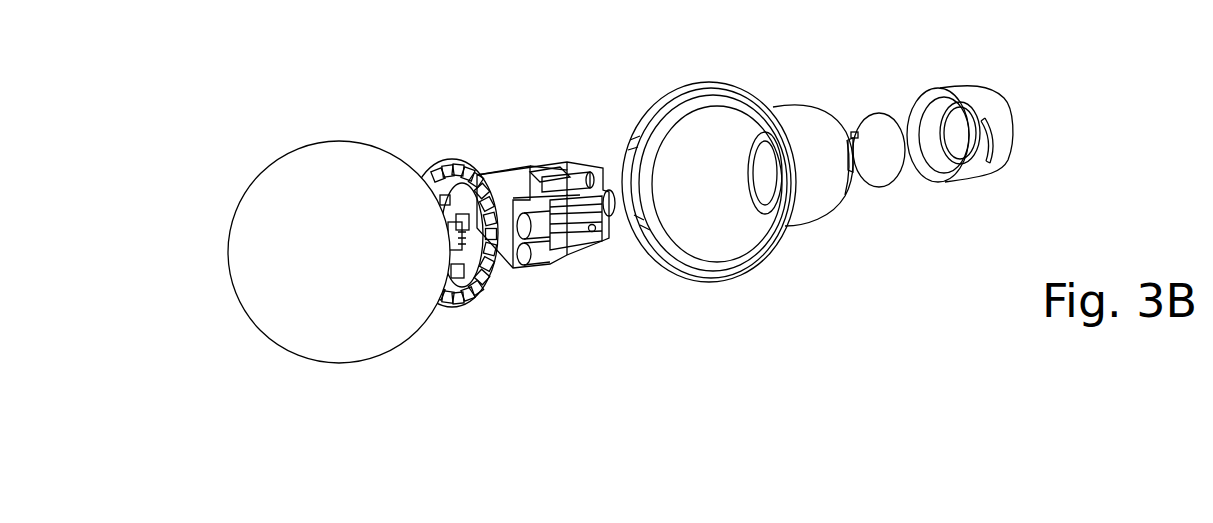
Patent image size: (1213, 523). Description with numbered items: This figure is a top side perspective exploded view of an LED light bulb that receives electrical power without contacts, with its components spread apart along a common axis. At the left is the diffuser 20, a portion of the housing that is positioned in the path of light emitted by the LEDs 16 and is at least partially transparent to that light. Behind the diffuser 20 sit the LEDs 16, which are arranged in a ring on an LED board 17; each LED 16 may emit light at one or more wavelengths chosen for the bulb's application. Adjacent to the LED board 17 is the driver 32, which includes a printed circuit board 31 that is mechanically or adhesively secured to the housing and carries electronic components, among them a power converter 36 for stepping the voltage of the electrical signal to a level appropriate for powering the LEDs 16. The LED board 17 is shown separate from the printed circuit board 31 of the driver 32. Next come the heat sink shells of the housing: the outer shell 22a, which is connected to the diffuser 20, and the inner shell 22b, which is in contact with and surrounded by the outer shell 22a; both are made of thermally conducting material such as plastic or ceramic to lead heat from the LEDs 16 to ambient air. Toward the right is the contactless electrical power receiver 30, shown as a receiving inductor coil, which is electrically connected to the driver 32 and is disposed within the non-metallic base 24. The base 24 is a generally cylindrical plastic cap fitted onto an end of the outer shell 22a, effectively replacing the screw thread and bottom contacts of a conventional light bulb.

The LED 16 is at (445, 86).
The LED board 17 is at (456, 272).
The diffuser 20 is at (270, 182).
The outer shell 22a is at (716, 32).
The inner shell 22b is at (669, 245).
The non-metallic base 24 is at (997, 174).
The contactless electrical power receiver 30 is at (871, 124).
The printed circuit board 31 is at (500, 188).
The driver 32 is at (546, 165).
The power converter 36 is at (532, 245).